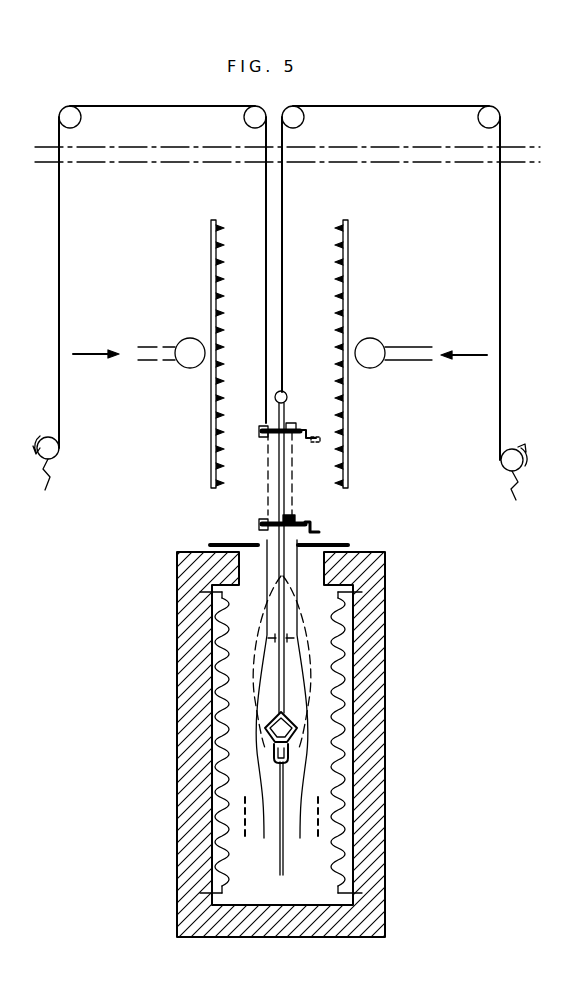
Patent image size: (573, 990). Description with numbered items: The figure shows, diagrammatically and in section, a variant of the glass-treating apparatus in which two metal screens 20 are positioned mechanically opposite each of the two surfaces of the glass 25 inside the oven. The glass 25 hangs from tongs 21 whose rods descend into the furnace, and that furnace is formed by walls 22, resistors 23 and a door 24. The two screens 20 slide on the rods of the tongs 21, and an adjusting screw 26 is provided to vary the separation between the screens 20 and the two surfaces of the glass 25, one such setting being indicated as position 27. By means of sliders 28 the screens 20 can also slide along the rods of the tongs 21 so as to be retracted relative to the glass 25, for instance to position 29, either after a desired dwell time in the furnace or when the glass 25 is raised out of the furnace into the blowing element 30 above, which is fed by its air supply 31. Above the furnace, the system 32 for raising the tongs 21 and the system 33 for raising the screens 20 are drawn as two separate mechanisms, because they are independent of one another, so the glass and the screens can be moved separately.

The screens 20 is at (243, 833).
The tongs 21 is at (298, 657).
The walls 22 is at (193, 866).
The resistors 23 is at (341, 768).
The door 24 is at (336, 544).
The glass 25 is at (283, 768).
The adjusting screw 26 is at (262, 531).
The position 27 is at (317, 838).
The sliders 28 is at (292, 511).
The position 29 is at (268, 736).
The blowing element 30 is at (348, 251).
The air supply 31 is at (373, 351).
The system for raising the tongs 32 is at (403, 106).
The system for raising the screens 33 is at (167, 106).